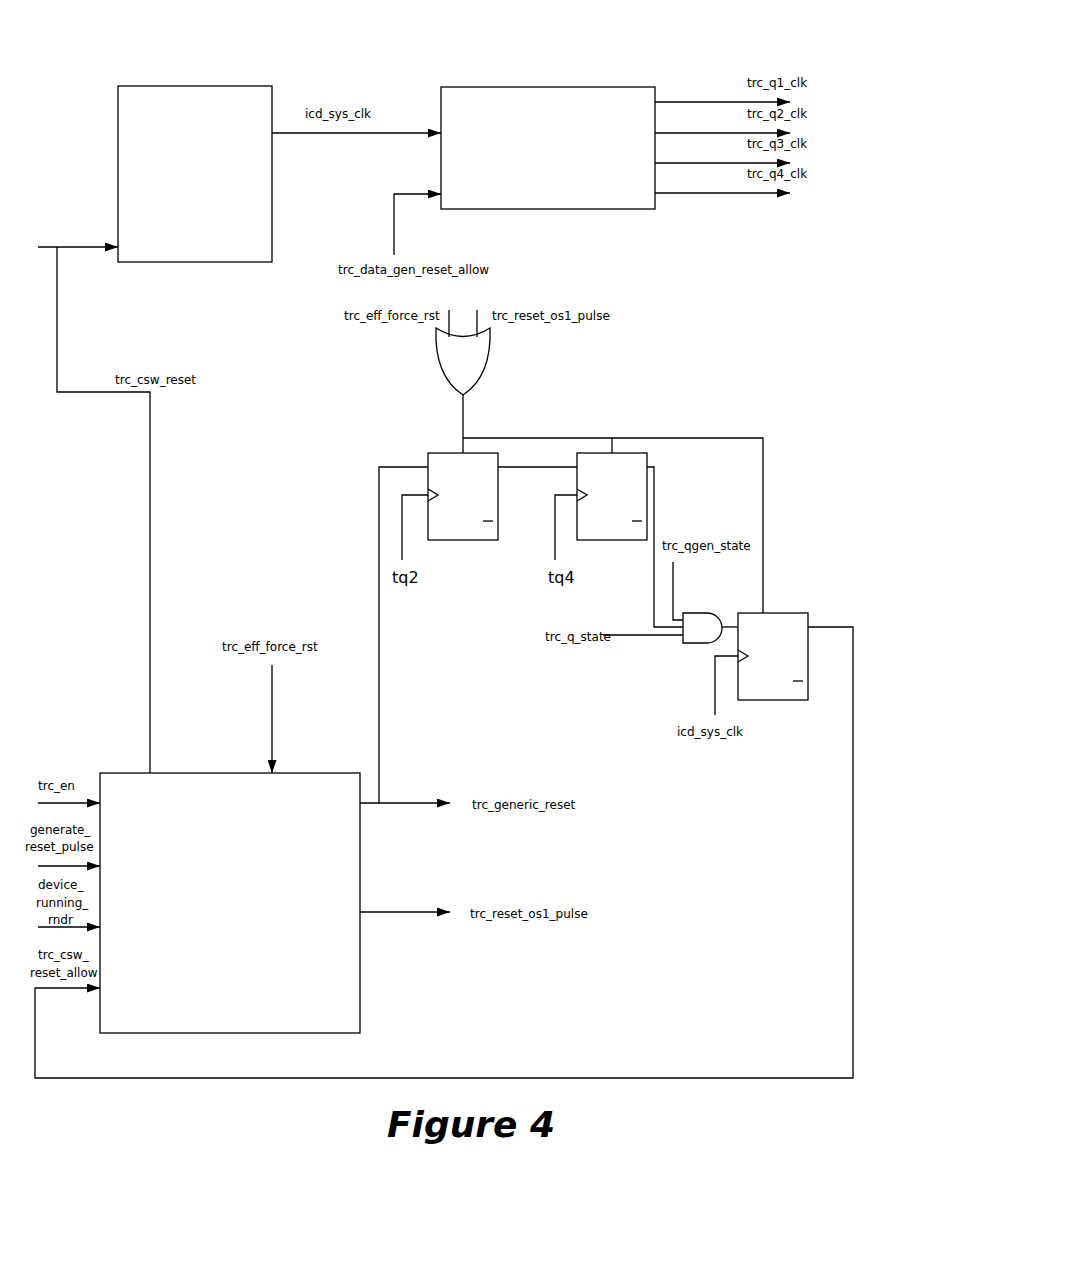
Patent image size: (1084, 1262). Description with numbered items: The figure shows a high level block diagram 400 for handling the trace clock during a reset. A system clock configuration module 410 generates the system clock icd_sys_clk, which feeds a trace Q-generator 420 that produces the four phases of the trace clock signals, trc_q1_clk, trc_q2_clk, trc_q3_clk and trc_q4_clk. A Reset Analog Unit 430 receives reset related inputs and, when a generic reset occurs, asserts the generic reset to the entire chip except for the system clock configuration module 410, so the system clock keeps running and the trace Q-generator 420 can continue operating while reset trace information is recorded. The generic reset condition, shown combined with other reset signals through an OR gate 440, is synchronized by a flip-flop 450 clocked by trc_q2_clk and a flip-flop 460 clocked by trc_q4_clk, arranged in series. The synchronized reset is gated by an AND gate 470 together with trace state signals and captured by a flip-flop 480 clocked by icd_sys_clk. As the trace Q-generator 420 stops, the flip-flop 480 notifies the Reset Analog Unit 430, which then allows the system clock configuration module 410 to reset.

The trace clock and reset circuit 400 is at (586, 37).
The system clock configuration module 410 is at (195, 174).
The trace Q-generator 420 is at (548, 148).
The Reset Analog Unit 430 is at (230, 903).
The OR gate 440 is at (470, 362).
The flip-flop 450 is at (435, 540).
The flip-flop 460 is at (584, 540).
The AND gate 470 is at (691, 620).
The flip-flop 480 is at (770, 612).